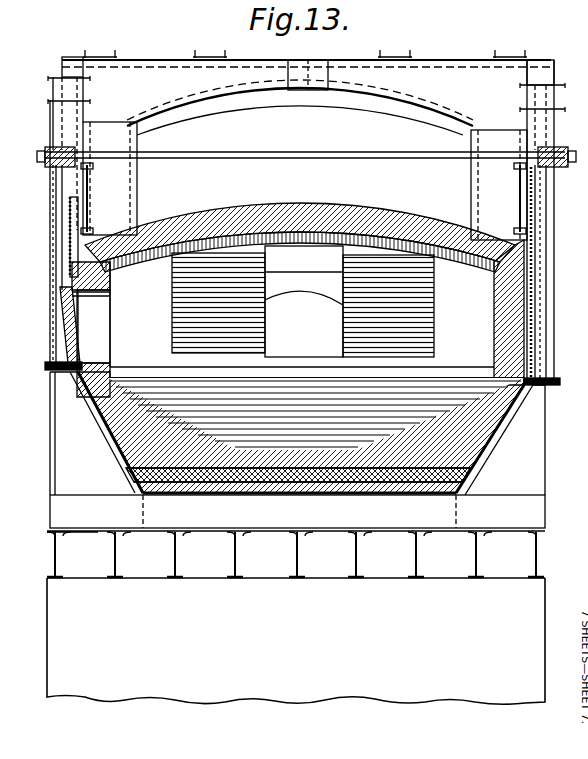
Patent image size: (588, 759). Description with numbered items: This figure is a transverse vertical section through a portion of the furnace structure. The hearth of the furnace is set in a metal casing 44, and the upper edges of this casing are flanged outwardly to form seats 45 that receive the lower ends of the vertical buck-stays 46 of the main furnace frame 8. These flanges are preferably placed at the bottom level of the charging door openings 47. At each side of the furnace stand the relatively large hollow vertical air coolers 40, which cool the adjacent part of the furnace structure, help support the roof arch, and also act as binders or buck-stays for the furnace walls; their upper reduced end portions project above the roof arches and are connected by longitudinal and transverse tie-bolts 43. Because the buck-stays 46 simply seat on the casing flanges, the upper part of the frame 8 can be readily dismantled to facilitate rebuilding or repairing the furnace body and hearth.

The main furnace frame 8 is at (343, 60).
The tie-bolts 43 is at (102, 134).
The hollow vertical air coolers 40 is at (303, 198).
The vertical buck-stays 46 is at (60, 178).
The seats 45 is at (56, 372).
The charging door openings 47 is at (100, 348).
The metal casing 44 is at (106, 428).